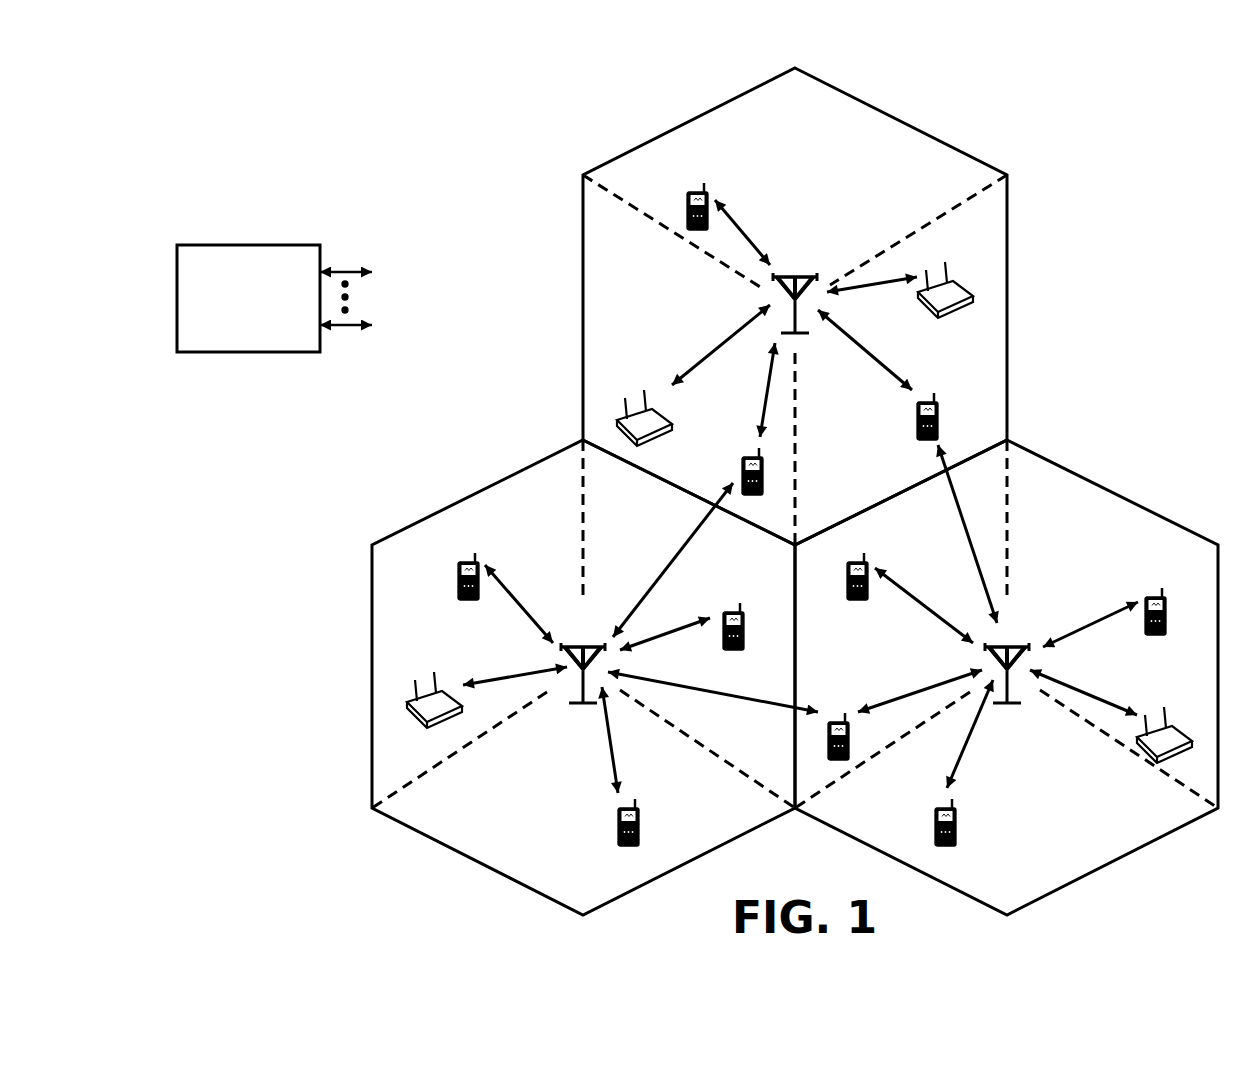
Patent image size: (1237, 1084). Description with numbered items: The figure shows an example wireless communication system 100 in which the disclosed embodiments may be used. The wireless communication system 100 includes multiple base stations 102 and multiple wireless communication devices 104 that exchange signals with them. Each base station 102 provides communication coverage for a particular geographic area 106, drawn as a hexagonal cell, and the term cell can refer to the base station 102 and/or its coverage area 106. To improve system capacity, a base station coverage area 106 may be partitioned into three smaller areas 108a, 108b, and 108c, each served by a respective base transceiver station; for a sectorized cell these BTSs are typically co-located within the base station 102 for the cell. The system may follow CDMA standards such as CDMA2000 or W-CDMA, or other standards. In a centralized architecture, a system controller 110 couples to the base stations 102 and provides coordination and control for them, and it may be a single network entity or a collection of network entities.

The wireless communication system 100 is at (1132, 134).
The base station 102 is at (794, 275).
The wireless communication device 104 is at (688, 198).
The coverage area 106 is at (901, 121).
The smaller area 108a is at (817, 134).
The smaller area 108b is at (643, 279).
The smaller area 108c is at (892, 479).
The system controller 110 is at (243, 245).